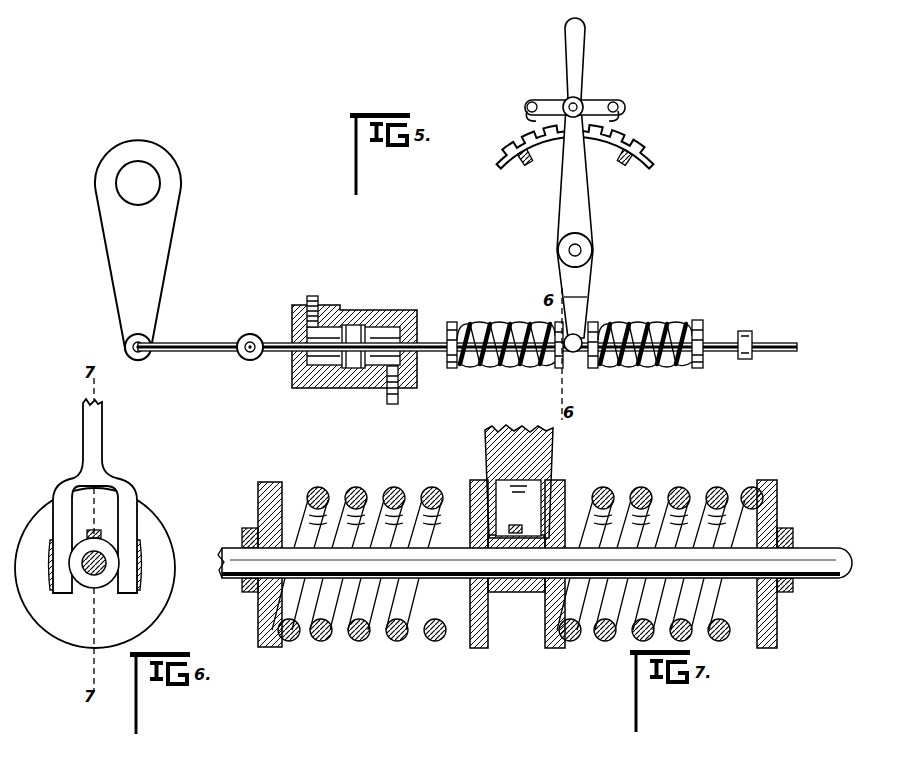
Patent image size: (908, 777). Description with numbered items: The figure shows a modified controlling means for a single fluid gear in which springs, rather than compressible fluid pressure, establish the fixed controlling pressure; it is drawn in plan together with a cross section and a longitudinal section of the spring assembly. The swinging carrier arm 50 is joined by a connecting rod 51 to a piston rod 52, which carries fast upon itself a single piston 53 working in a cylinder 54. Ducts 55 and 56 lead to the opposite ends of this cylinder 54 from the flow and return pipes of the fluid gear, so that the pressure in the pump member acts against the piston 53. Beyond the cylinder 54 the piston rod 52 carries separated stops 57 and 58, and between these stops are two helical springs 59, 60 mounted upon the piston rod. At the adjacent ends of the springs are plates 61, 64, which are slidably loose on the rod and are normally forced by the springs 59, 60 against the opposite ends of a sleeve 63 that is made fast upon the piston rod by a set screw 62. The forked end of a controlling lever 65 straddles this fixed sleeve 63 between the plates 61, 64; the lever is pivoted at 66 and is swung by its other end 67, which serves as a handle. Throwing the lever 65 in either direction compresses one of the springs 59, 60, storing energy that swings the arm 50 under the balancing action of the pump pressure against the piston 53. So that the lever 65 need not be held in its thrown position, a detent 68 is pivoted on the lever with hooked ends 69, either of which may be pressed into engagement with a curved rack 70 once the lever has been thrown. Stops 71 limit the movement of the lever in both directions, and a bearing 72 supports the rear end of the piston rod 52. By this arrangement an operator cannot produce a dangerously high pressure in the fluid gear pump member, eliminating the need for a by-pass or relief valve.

In FIG. 5, the swinging carrier arm 50 is at (171, 273).
In FIG. 5, the connecting rod 51 is at (201, 356).
In FIG. 5, the piston rod 52 is at (730, 352).
In FIG. 6, the piston rod 52 is at (106, 562).
In FIG. 7, the piston rod 52 is at (838, 580).
In FIG. 5, the piston 53 is at (350, 372).
In FIG. 5, the cylinder 54 is at (385, 312).
In FIG. 5, the duct 55 is at (312, 296).
In FIG. 5, the duct 56 is at (393, 402).
In FIG. 5, the stop 57 is at (451, 368).
In FIG. 7, the stop 57 is at (270, 648).
In FIG. 5, the stop 58 is at (697, 368).
In FIG. 7, the stop 58 is at (767, 648).
In FIG. 5, the helical spring 59 is at (496, 322).
In FIG. 7, the helical spring 59 is at (357, 490).
In FIG. 5, the helical spring 60 is at (645, 344).
In FIG. 7, the helical spring 60 is at (681, 490).
In FIG. 5, the plate 61 is at (557, 366).
In FIG. 7, the plate 61 is at (479, 648).
In FIG. 6, the set screw 62 is at (96, 530).
In FIG. 7, the set screw 62 is at (516, 525).
In FIG. 5, the sleeve 63 is at (573, 353).
In FIG. 6, the sleeve 63 is at (82, 580).
In FIG. 7, the sleeve 63 is at (533, 593).
In FIG. 5, the plate 64 is at (594, 368).
In FIG. 6, the plate 64 is at (150, 525).
In FIG. 7, the plate 64 is at (557, 648).
In FIG. 5, the controlling lever 65 is at (588, 216).
In FIG. 6, the controlling lever 65 is at (104, 452).
In FIG. 7, the controlling lever 65 is at (548, 448).
In FIG. 5, the pivot 66 is at (569, 250).
In FIG. 5, the handle 67 is at (584, 52).
In FIG. 5, the detent 68 is at (548, 100).
In FIG. 5, the hooked ends 69 is at (620, 115).
In FIG. 5, the curved rack 70 is at (556, 142).
In FIG. 5, the stops 71 is at (628, 163).
In FIG. 5, the bearing 72 is at (742, 331).